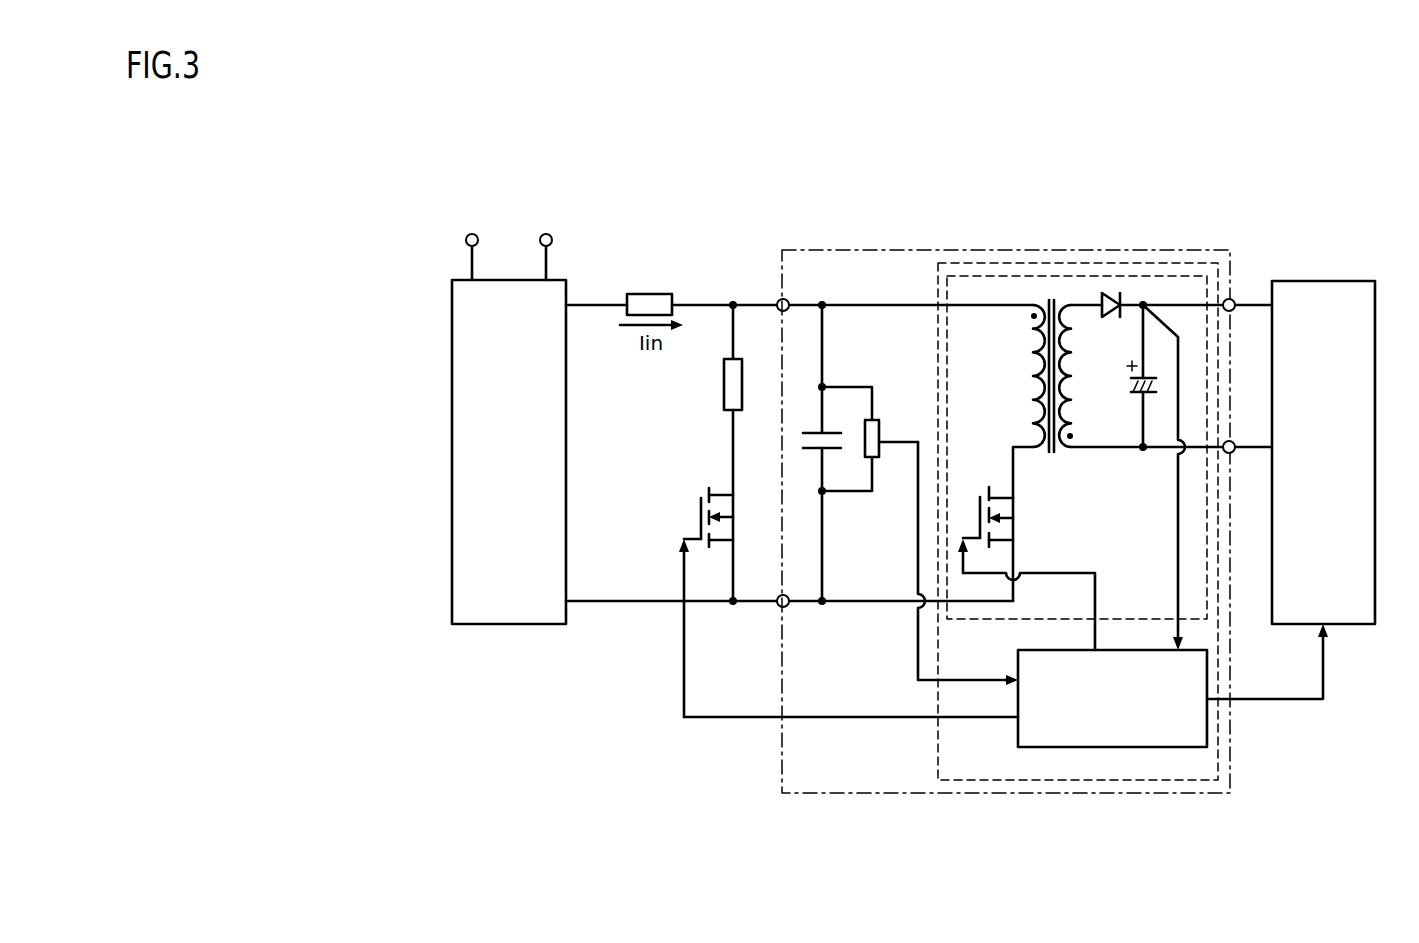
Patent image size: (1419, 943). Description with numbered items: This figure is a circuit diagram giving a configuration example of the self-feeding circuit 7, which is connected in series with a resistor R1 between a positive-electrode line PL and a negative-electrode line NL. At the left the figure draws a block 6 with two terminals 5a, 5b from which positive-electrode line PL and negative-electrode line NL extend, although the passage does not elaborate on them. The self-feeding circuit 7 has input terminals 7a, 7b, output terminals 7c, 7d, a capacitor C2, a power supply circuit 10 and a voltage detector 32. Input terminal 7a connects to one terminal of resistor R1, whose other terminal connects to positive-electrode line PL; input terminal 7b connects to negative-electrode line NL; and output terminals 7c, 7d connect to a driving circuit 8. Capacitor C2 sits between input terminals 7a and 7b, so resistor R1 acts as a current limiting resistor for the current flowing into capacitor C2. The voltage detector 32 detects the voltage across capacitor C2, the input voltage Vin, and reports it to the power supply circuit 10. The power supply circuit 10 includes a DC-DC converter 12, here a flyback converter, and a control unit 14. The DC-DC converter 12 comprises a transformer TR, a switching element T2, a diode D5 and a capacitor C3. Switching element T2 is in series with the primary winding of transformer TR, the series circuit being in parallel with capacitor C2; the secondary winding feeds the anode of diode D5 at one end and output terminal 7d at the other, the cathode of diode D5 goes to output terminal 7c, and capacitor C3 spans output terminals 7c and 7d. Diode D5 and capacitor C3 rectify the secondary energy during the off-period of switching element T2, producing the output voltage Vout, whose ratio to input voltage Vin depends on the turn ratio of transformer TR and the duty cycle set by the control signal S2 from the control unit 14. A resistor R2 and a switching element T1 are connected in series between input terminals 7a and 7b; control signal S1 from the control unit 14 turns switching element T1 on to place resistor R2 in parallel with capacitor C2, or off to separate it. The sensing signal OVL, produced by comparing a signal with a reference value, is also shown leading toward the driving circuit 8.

The input terminal 5a is at (467, 234).
The input terminal 5b is at (551, 234).
The main circuit 6 is at (515, 625).
The self-feeding circuit 7 is at (1180, 249).
The input terminal 7a is at (780, 299).
The input terminal 7b is at (778, 607).
The output terminal 7c is at (1236, 300).
The output terminal 7d is at (1232, 453).
The driving circuit 8 is at (1343, 282).
The power supply circuit 10 is at (938, 276).
The DC-DC converter 12 is at (975, 622).
The control unit 14 is at (1158, 748).
The voltage detector 32 is at (873, 457).
The resistor R1 is at (652, 294).
The resistor R2 is at (722, 383).
The switching element T1 is at (699, 505).
The switching element T2 is at (979, 505).
The capacitor C2 is at (812, 452).
The capacitor C3 is at (1155, 395).
The diode D5 is at (1171, 320).
The transformer TR is at (1053, 472).
The positive-electrode line PL is at (600, 300).
The negative-electrode line NL is at (598, 602).
The control signal S1 is at (848, 628).
The control signal S2 is at (1043, 594).
The input voltage Vin is at (948, 548).
The output voltage Vout is at (1155, 477).
The sensing signal OVL is at (1267, 661).